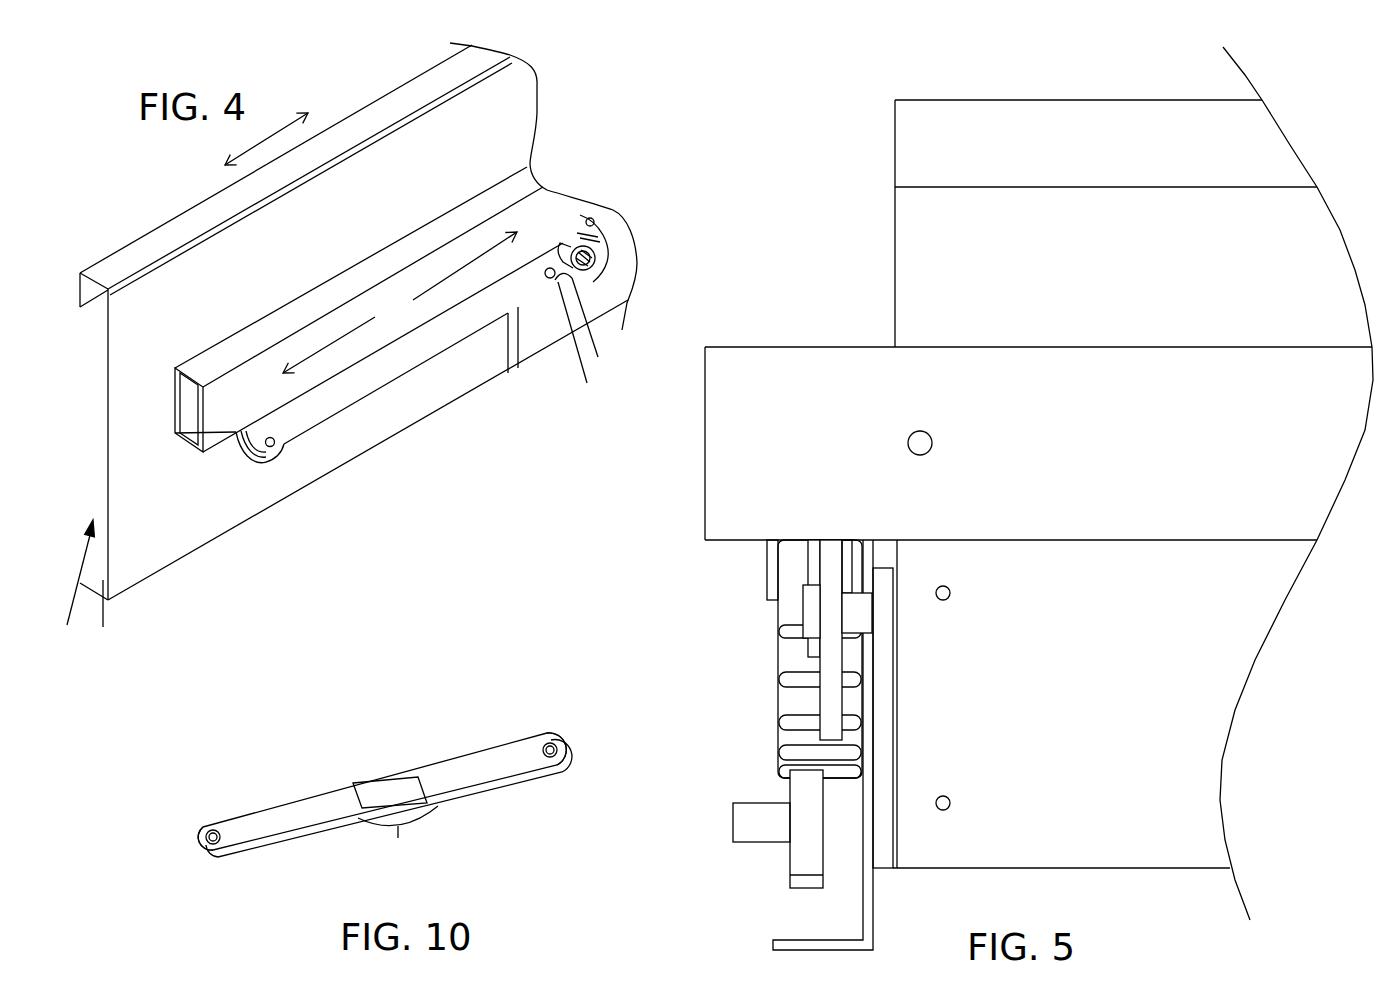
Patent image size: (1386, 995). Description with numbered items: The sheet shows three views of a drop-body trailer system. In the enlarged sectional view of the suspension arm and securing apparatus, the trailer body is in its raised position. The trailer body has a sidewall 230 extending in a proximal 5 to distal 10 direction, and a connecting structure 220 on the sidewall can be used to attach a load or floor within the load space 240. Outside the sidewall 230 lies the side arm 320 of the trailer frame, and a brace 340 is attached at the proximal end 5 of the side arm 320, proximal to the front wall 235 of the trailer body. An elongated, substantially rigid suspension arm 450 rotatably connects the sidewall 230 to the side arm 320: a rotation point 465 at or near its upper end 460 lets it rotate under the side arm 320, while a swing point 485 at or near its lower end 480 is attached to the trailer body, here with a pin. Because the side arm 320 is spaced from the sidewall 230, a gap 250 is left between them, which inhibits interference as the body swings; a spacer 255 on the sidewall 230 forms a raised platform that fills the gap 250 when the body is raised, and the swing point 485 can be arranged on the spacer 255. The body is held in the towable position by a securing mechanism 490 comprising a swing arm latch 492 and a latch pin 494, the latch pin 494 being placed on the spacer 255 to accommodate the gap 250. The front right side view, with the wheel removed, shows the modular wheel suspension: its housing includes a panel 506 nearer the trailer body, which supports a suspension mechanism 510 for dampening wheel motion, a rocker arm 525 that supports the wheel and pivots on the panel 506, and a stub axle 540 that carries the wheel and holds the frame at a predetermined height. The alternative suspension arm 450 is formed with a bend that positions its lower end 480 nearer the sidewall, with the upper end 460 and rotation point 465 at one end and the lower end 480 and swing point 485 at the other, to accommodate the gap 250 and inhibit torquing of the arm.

In FIG. 4, the proximal end 5 is at (276, 131).
In FIG. 4, the distal end 10 is at (202, 174).
In FIG. 4, the connecting structure 220 is at (138, 619).
In FIG. 4, the sidewall 230 is at (369, 321).
In FIG. 5, the front wall 235 is at (1061, 223).
In FIG. 4, the load space 240 is at (112, 607).
In FIG. 5, the gap 250 is at (1058, 704).
In FIG. 4, the spacer 255 is at (537, 369).
In FIG. 5, the spacer 255 is at (955, 718).
In FIG. 4, the side arm 320 is at (330, 309).
In FIG. 5, the brace 340 is at (1038, 404).
In FIG. 4, the suspension arm 450 is at (396, 419).
In FIG. 10, the suspension arm 450 is at (385, 791).
In FIG. 5, the suspension arm 450 is at (727, 639).
In FIG. 4, the upper end 460 is at (256, 513).
In FIG. 10, the upper end 460 is at (241, 798).
In FIG. 4, the rotation point 465 is at (237, 503).
In FIG. 10, the rotation point 465 is at (254, 803).
In FIG. 4, the lower end 480 is at (606, 347).
In FIG. 10, the lower end 480 is at (524, 717).
In FIG. 4, the swing point 485 is at (501, 366).
In FIG. 10, the swing point 485 is at (507, 724).
In FIG. 5, the securing mechanism 490 is at (742, 605).
In FIG. 4, the swing arm latch 492 is at (624, 297).
In FIG. 4, the latch pin 494 is at (647, 269).
In FIG. 5, the panel 506 is at (885, 745).
In FIG. 5, the suspension mechanism 510 is at (760, 659).
In FIG. 5, the rocker arm 525 is at (744, 835).
In FIG. 5, the stub axle 540 is at (733, 793).